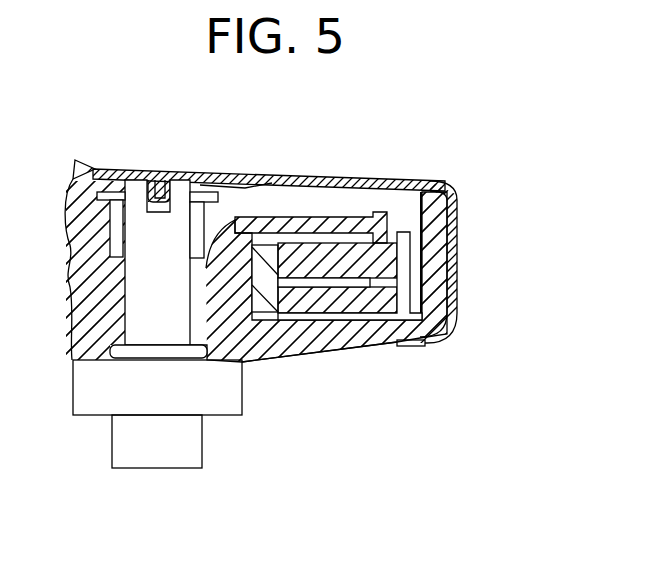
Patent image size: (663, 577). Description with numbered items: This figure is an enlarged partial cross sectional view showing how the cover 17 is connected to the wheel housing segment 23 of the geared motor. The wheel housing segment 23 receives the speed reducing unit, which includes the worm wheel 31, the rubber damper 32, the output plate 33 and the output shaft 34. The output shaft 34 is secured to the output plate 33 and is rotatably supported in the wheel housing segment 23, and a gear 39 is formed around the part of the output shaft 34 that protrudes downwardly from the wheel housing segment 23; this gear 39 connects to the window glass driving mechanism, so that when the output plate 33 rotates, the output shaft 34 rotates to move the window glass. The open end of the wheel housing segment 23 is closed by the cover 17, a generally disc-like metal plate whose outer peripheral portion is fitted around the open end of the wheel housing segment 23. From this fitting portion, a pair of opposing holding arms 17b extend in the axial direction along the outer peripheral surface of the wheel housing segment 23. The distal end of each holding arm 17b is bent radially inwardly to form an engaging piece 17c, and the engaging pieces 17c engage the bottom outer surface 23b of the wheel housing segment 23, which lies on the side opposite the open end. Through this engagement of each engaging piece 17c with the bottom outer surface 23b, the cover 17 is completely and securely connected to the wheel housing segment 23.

The cover 17 is at (256, 171).
The holding arm 17b is at (457, 264).
The engaging piece 17c is at (420, 345).
The wheel housing segment 23 is at (433, 202).
The bottom outer surface 23b is at (378, 348).
The worm wheel 31 is at (350, 307).
The rubber damper 32 is at (297, 270).
The output plate 33 is at (288, 222).
The output shaft 34 is at (140, 462).
The gear 39 is at (88, 414).